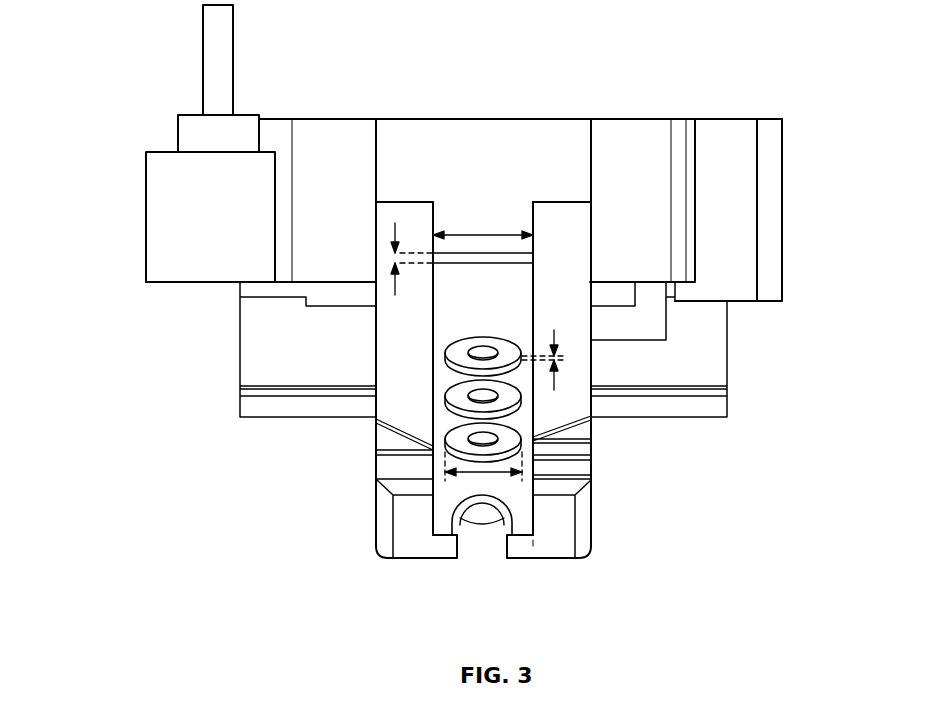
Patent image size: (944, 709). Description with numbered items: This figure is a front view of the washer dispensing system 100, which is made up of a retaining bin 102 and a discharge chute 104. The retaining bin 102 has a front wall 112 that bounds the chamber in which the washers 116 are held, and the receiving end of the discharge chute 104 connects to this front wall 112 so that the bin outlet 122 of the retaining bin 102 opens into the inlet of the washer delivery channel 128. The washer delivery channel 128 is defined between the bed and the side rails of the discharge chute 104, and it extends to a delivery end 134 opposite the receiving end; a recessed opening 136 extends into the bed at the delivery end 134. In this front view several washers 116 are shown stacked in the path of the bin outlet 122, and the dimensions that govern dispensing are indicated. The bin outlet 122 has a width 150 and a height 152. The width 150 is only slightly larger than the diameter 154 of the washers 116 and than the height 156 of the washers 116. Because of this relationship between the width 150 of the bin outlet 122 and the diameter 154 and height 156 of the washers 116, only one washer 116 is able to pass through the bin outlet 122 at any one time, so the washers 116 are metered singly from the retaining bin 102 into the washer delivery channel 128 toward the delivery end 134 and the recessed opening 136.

The washer dispensing system 100 is at (114, 37).
The retaining bin 102 is at (742, 115).
The discharge chute 104 is at (600, 519).
The front wall 112 is at (553, 143).
The washers 116 is at (460, 430).
The bin outlet 122 is at (498, 262).
The washer delivery channel 128 is at (477, 283).
The delivery end 134 is at (533, 547).
The recessed opening 136 is at (485, 537).
The width 150 is at (482, 233).
The height 152 is at (393, 292).
The diameter 154 is at (485, 477).
The height 156 is at (555, 383).